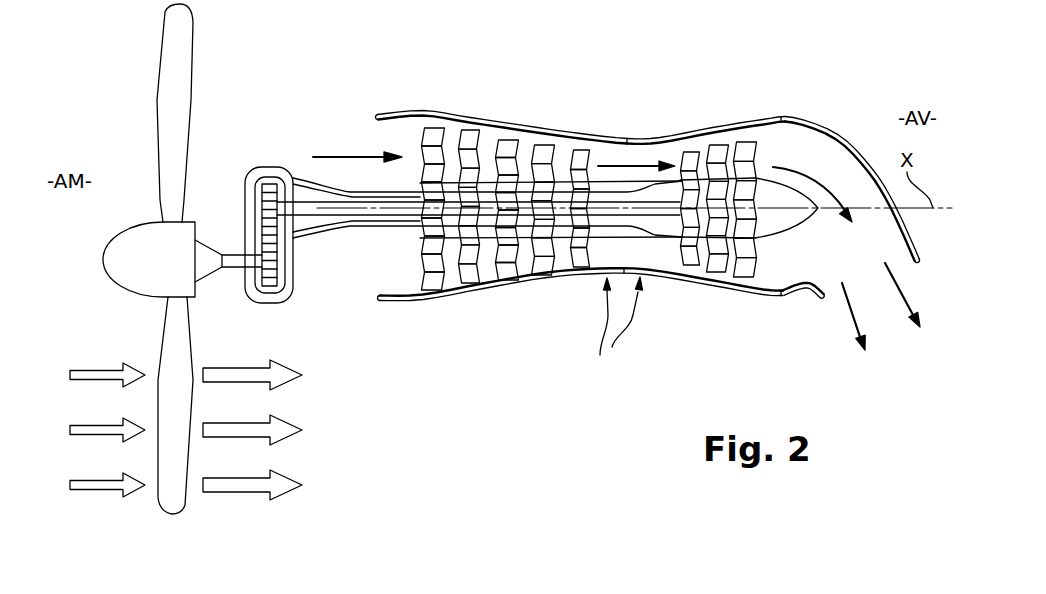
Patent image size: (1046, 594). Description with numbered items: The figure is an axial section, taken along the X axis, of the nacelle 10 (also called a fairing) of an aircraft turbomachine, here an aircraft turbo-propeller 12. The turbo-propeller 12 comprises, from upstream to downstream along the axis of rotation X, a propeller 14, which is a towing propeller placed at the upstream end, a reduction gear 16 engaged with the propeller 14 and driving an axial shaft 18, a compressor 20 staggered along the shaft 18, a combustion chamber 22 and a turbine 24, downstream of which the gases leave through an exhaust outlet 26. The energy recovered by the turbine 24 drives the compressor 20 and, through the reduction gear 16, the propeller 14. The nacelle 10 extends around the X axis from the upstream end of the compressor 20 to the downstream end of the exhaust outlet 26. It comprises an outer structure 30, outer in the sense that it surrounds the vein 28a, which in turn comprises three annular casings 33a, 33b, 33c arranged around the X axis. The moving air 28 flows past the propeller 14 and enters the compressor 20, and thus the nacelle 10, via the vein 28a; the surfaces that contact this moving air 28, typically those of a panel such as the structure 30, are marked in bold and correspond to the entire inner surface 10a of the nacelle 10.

The nacelle 10 is at (642, 100).
The inner surface of the nacelle 10a is at (530, 153).
The aircraft turbo-propeller 12 is at (94, 298).
The propeller 14 is at (157, 97).
The reduction gear 16 is at (270, 172).
The axial shaft 18 is at (358, 212).
The compressor 20 is at (510, 143).
The combustion chamber 22 is at (640, 250).
The turbine 24 is at (718, 155).
The exhaust outlet 26 is at (818, 270).
The moving air 28 is at (350, 153).
The vein 28a is at (398, 268).
The structure 30 is at (613, 331).
The annular casing 33a is at (470, 122).
The annular casing 33b is at (762, 128).
The annular casing 33c is at (832, 137).